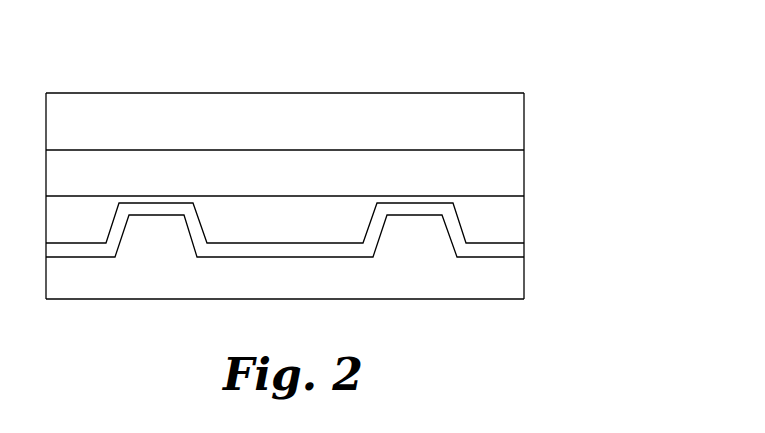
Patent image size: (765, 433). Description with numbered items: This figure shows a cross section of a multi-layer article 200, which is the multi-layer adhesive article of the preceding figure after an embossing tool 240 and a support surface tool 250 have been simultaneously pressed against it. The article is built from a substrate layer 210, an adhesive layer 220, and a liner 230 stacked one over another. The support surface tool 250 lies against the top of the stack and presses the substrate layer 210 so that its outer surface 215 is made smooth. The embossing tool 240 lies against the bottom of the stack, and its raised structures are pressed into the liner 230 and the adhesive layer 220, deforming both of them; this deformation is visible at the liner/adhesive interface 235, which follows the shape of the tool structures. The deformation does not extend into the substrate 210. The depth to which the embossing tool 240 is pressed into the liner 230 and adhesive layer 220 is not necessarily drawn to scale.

The multi-layer article 200 is at (350, 181).
The substrate layer 210 is at (524, 168).
The outer surface of substrate layer 215 is at (305, 150).
The adhesive layer 220 is at (524, 213).
The liner 230 is at (524, 248).
The liner/adhesive interface 235 is at (158, 203).
The embossing tool 240 is at (524, 285).
The support surface tool 250 is at (524, 123).